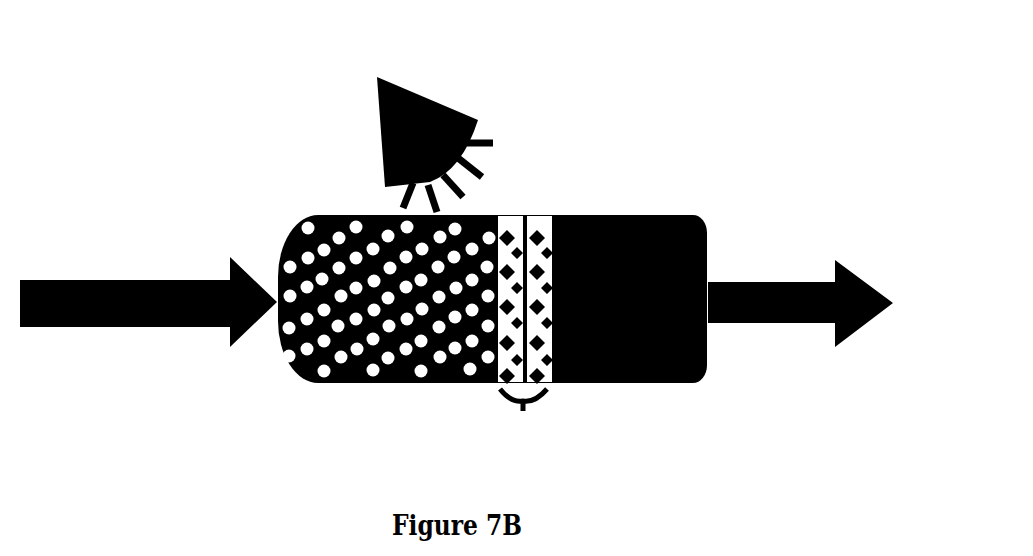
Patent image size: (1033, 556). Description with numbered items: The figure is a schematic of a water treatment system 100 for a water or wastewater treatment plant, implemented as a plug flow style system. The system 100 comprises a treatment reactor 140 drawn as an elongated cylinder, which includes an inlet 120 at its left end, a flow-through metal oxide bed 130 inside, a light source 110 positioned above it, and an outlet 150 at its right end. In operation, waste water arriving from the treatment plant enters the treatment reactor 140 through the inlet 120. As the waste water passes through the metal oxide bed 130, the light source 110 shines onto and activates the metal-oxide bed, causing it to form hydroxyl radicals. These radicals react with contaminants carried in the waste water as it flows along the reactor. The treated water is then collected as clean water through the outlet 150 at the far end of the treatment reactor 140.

The water treatment system 100 is at (692, 110).
The light source 110 is at (427, 60).
The inlet 120 is at (157, 256).
The flow-through metal oxide bed 130 is at (546, 189).
The treatment reactor 140 is at (707, 196).
The outlet 150 is at (776, 356).